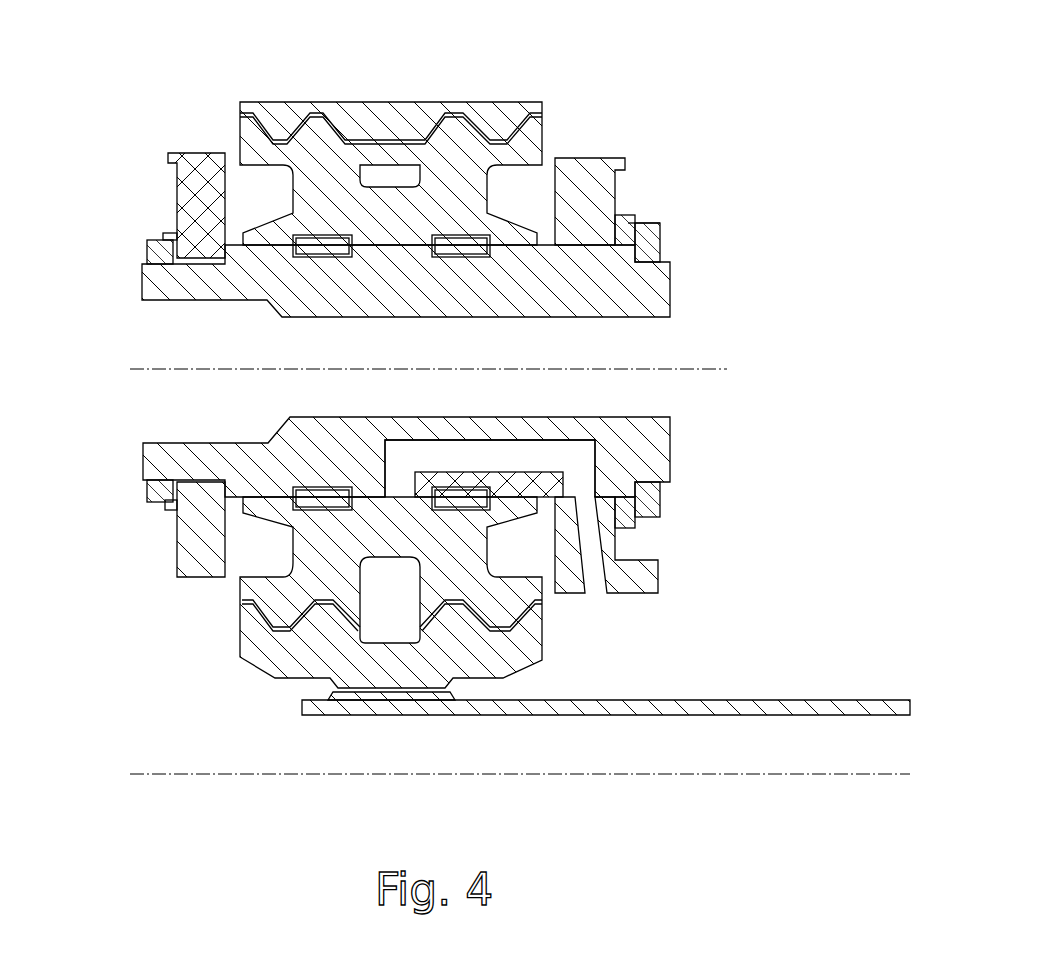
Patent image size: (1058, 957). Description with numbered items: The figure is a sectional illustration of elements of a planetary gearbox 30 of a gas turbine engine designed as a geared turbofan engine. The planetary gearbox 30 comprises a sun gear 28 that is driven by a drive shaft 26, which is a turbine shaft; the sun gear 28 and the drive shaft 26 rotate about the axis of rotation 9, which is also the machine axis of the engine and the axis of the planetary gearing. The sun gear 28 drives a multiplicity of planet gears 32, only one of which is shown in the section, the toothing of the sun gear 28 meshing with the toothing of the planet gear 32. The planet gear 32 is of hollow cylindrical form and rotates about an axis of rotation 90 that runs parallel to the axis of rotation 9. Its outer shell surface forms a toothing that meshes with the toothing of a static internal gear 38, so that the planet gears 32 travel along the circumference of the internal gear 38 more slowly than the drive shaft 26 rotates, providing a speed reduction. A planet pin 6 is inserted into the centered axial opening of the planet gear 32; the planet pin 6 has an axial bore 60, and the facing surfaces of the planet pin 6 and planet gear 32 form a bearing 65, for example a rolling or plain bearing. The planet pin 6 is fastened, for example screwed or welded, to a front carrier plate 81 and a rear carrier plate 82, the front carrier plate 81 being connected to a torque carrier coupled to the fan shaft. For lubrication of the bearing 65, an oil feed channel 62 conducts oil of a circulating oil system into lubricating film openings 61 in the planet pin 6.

The planet pin 6 is at (645, 292).
The axis of rotation 9 is at (345, 777).
The drive shaft 26 is at (582, 707).
The sun gear 28 is at (508, 662).
The planetary gearbox 30 is at (105, 245).
The planet gear 32 is at (542, 127).
The internal gear 38 is at (497, 120).
The axial bore 60 is at (653, 348).
The lubricating film openings 61 is at (488, 457).
The oil feed channel 62 is at (590, 570).
The bearing 65 is at (393, 246).
The front carrier plate 81 is at (193, 187).
The rear carrier plate 82 is at (602, 190).
The axis of rotation 90 is at (703, 370).